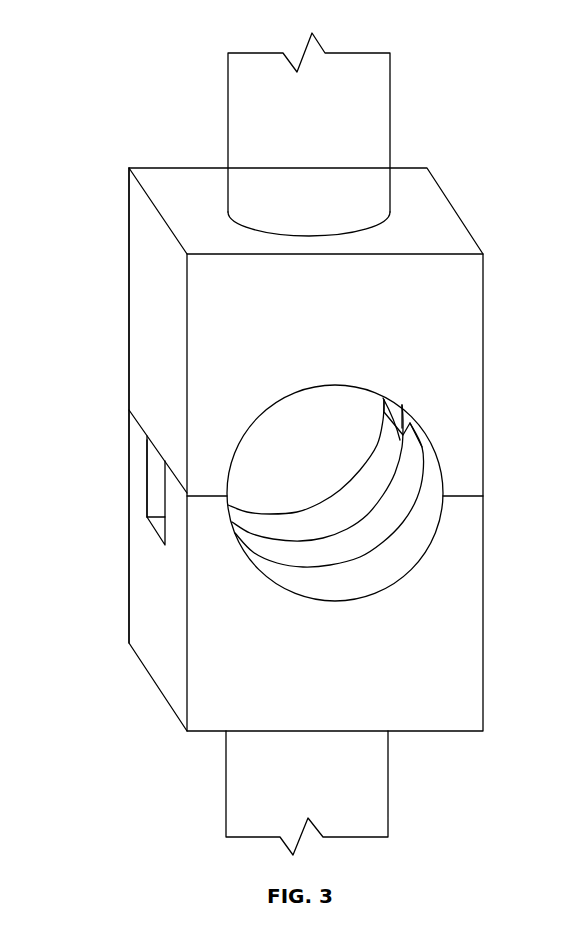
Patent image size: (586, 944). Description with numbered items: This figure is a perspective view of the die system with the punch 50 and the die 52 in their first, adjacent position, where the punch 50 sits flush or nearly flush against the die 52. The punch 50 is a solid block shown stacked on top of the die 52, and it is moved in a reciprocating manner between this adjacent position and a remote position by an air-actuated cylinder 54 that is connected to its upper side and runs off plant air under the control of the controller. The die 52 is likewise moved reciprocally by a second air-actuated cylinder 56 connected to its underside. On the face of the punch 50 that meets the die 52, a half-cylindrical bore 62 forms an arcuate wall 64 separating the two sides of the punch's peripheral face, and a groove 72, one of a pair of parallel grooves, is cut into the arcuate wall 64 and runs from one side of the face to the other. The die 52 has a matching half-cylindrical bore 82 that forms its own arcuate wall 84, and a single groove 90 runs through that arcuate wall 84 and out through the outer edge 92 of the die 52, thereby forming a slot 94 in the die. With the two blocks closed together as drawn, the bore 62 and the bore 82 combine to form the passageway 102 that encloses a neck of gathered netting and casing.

The punch 50 is at (145, 238).
The die 52 is at (137, 580).
The air-actuated cylinder 54 is at (250, 145).
The air-actuated cylinder 56 is at (360, 813).
The half-cylindrical bore 62 is at (280, 428).
The arcuate wall 64 is at (430, 460).
The groove 72 is at (412, 413).
The half-cylindrical bore 82 is at (300, 488).
The arcuate wall 84 is at (397, 565).
The groove 90 is at (400, 500).
The outer edge 92 is at (135, 498).
The slot 94 is at (157, 472).
The passageway 102 is at (343, 450).